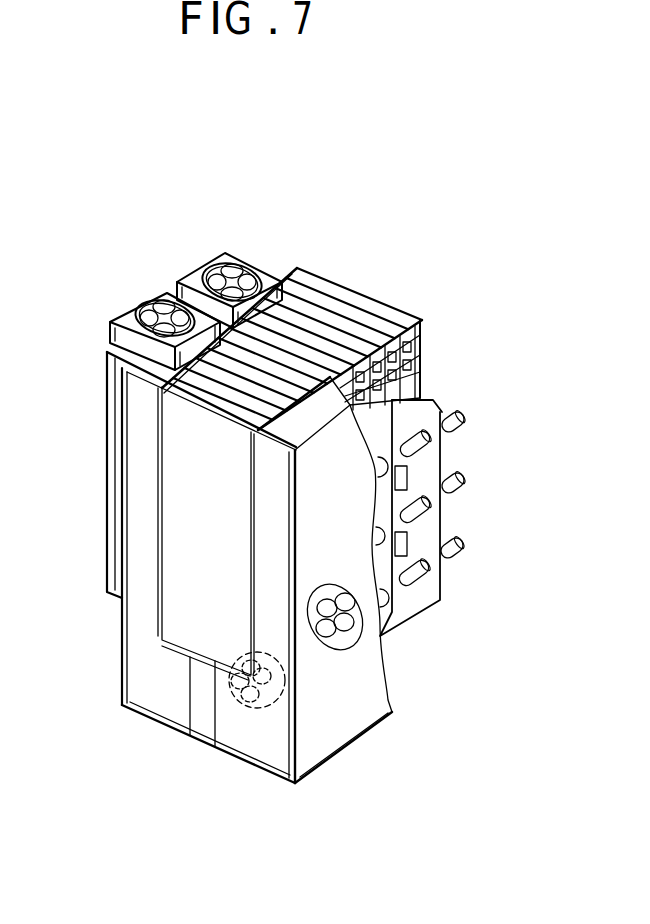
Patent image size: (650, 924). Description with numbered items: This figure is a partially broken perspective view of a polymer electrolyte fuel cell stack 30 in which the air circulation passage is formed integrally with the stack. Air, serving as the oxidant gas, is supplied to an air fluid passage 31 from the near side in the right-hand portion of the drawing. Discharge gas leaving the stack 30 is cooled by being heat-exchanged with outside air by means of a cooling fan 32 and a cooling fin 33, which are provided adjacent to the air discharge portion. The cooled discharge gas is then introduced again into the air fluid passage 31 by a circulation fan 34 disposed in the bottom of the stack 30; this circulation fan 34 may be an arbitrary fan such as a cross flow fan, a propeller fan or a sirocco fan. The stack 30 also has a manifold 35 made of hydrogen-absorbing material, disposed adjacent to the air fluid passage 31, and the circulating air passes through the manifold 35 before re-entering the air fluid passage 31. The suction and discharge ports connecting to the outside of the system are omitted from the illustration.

The fuel cell stack 30 is at (353, 307).
The air fluid passage 31 is at (417, 373).
The cooling fan 32 is at (205, 268).
The cooling fin 33 is at (110, 412).
The circulation fan 34 is at (345, 640).
The manifold 35 is at (462, 475).